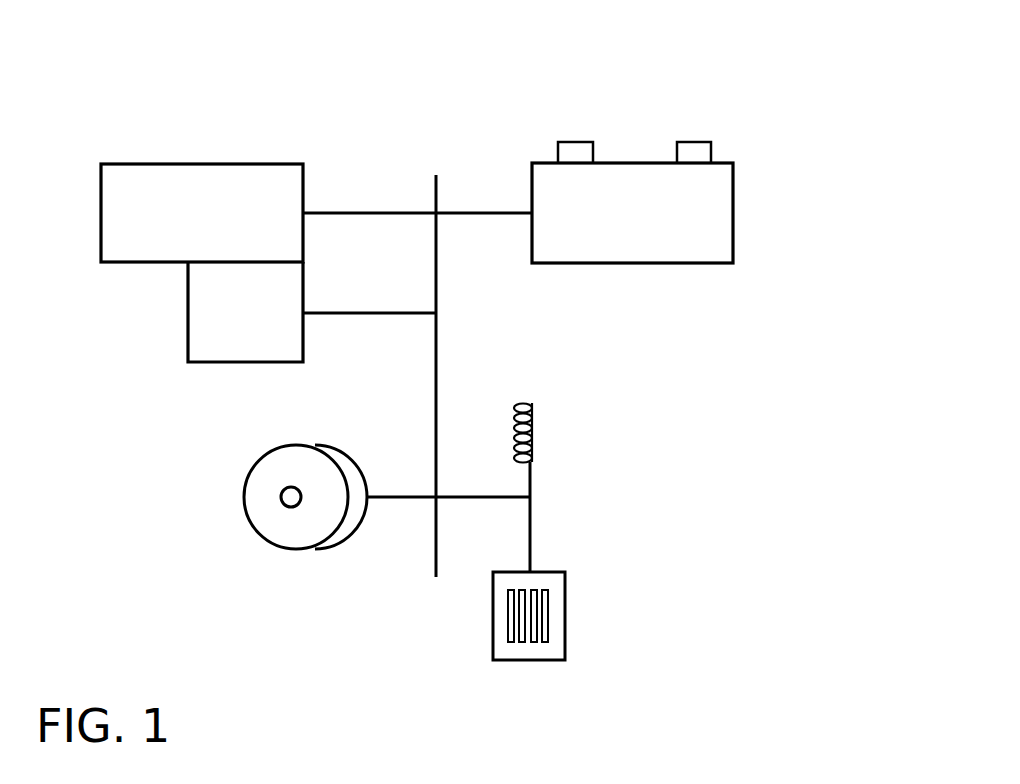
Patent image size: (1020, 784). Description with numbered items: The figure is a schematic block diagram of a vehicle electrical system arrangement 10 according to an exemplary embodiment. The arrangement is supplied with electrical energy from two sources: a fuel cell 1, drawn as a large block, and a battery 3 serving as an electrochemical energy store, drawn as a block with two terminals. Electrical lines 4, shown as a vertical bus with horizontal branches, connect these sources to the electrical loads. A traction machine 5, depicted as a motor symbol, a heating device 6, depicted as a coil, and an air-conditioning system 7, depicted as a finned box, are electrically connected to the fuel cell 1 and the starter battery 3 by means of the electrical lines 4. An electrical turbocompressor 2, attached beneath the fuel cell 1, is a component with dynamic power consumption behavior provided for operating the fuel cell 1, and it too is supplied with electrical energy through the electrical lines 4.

The vehicle electrical system arrangement 10 is at (797, 121).
The fuel cell 1 is at (303, 195).
The electrical turbocompressor 2 is at (188, 332).
The battery 3 is at (733, 213).
The electrical lines 4 is at (436, 363).
The traction machine 5 is at (257, 463).
The heating device 6 is at (531, 443).
The air-conditioning system 7 is at (565, 606).